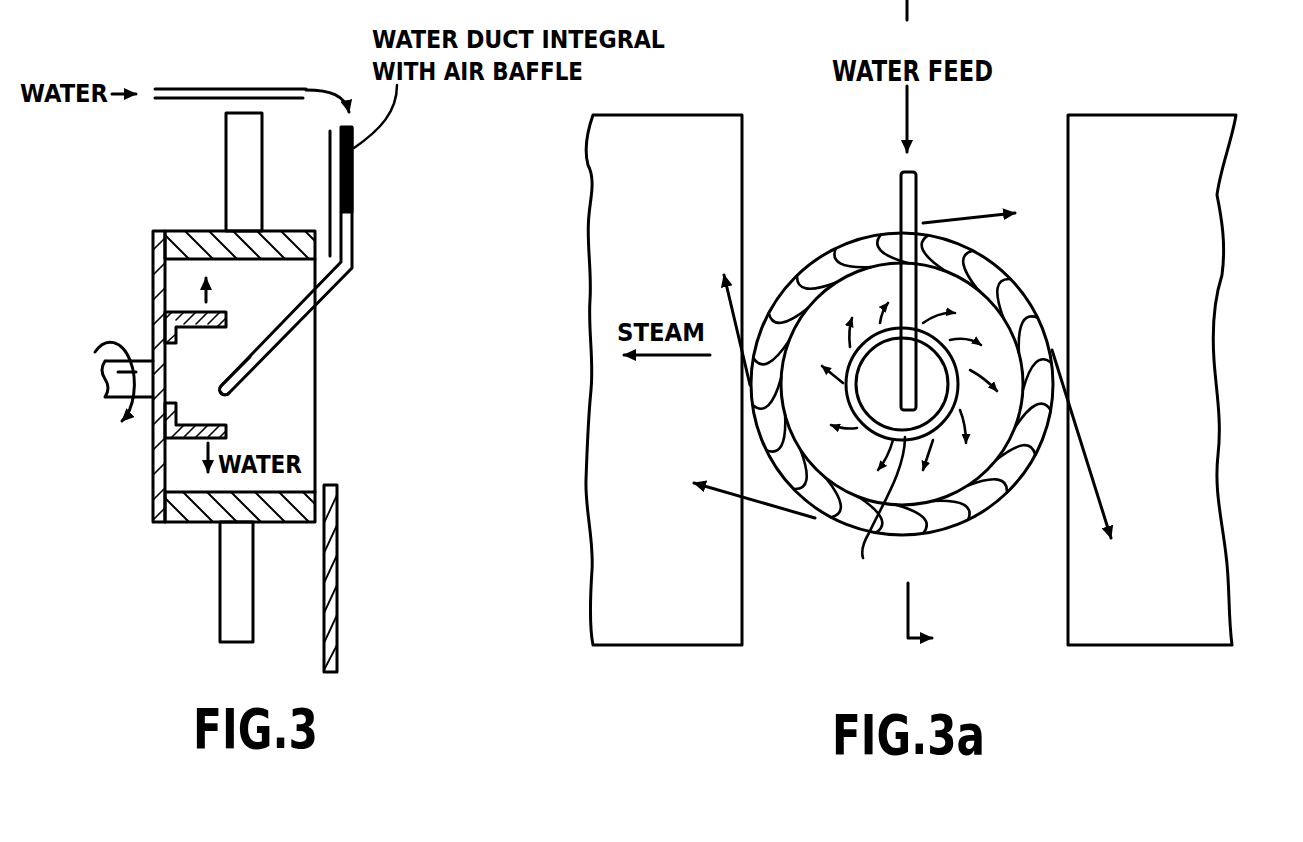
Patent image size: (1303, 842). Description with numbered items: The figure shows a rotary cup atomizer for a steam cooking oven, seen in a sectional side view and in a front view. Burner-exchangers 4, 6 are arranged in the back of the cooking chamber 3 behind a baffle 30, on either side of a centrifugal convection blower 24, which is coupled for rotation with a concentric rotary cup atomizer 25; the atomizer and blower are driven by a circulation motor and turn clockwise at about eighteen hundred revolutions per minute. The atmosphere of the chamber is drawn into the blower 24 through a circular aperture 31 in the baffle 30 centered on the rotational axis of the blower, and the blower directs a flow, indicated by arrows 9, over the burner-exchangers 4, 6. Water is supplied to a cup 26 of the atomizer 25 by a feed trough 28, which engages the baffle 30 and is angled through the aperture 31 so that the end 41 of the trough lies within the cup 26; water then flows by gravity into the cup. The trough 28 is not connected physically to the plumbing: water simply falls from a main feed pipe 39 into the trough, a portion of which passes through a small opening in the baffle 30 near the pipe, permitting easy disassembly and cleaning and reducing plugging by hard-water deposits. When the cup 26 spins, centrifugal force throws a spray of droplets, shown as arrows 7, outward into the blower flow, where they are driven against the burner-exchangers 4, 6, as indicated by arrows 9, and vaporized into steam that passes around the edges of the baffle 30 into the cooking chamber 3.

In FIG. 3A, the cooking chamber 3 is at (936, 616).
In FIG. 3, the burner-exchanger 4 is at (232, 615).
In FIG. 3A, the burner-exchanger 4 is at (1208, 530).
In FIG. 3A, the burner-exchanger 6 is at (610, 555).
In FIG. 3A, the arrows (water spray droplets) 7 is at (925, 322).
In FIG. 3A, the arrows (blower flow) 9 is at (961, 216).
In FIG. 3, the centrifugal convection blower 24 is at (195, 515).
In FIG. 3, the rotary cup atomizer 25 is at (100, 318).
In FIG. 3, the cup 26 is at (197, 312).
In FIG. 3A, the cup 26 is at (878, 514).
In FIG. 3, the feed trough 28 is at (340, 277).
In FIG. 3, the baffle 30 is at (340, 585).
In FIG. 3, the circular aperture 31 is at (315, 368).
In FIG. 3, the main feed pipe 39 is at (197, 88).
In FIG. 3, the end of the trough 41 is at (218, 396).